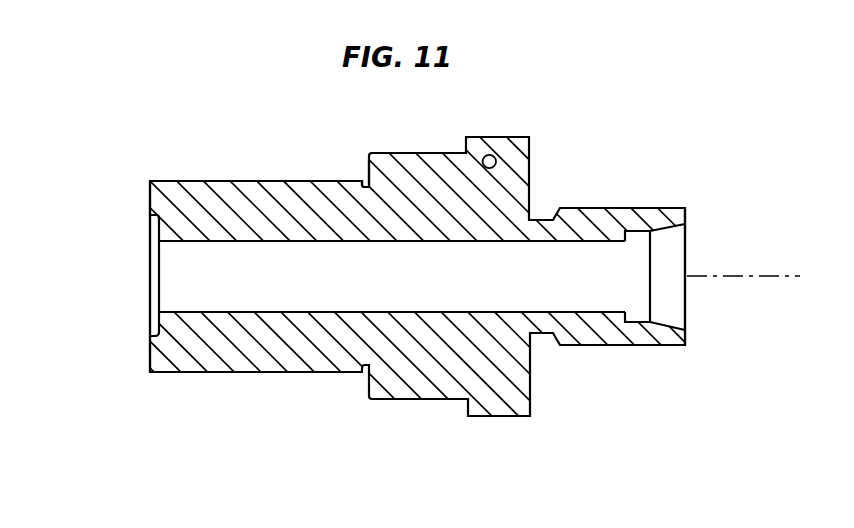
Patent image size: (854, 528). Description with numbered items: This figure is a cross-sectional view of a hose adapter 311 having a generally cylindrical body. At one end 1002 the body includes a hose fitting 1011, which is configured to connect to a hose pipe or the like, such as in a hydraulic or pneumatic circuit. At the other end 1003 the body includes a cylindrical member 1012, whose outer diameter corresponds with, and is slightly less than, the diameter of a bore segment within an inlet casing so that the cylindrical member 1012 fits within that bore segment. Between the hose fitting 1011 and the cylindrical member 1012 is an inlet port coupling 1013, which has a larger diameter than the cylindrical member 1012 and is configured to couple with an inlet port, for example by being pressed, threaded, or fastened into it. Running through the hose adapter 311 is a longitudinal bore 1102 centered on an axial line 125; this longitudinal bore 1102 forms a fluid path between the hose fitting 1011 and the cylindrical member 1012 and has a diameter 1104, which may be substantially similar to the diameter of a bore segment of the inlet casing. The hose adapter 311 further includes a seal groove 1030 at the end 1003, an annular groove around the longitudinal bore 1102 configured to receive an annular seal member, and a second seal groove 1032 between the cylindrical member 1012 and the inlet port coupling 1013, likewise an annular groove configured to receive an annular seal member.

The hose adapter 311 is at (86, 150).
The end 1003 is at (106, 380).
The seal groove 1030 is at (153, 325).
The seal groove 1032 is at (368, 178).
The longitudinal bore 1102 is at (373, 243).
The diameter 1104 is at (489, 250).
The cylindrical member 1012 is at (247, 373).
The inlet port coupling 1013 is at (412, 400).
The hose fitting 1011 is at (640, 207).
The end 1002 is at (726, 298).
The axial line 125 is at (759, 273).